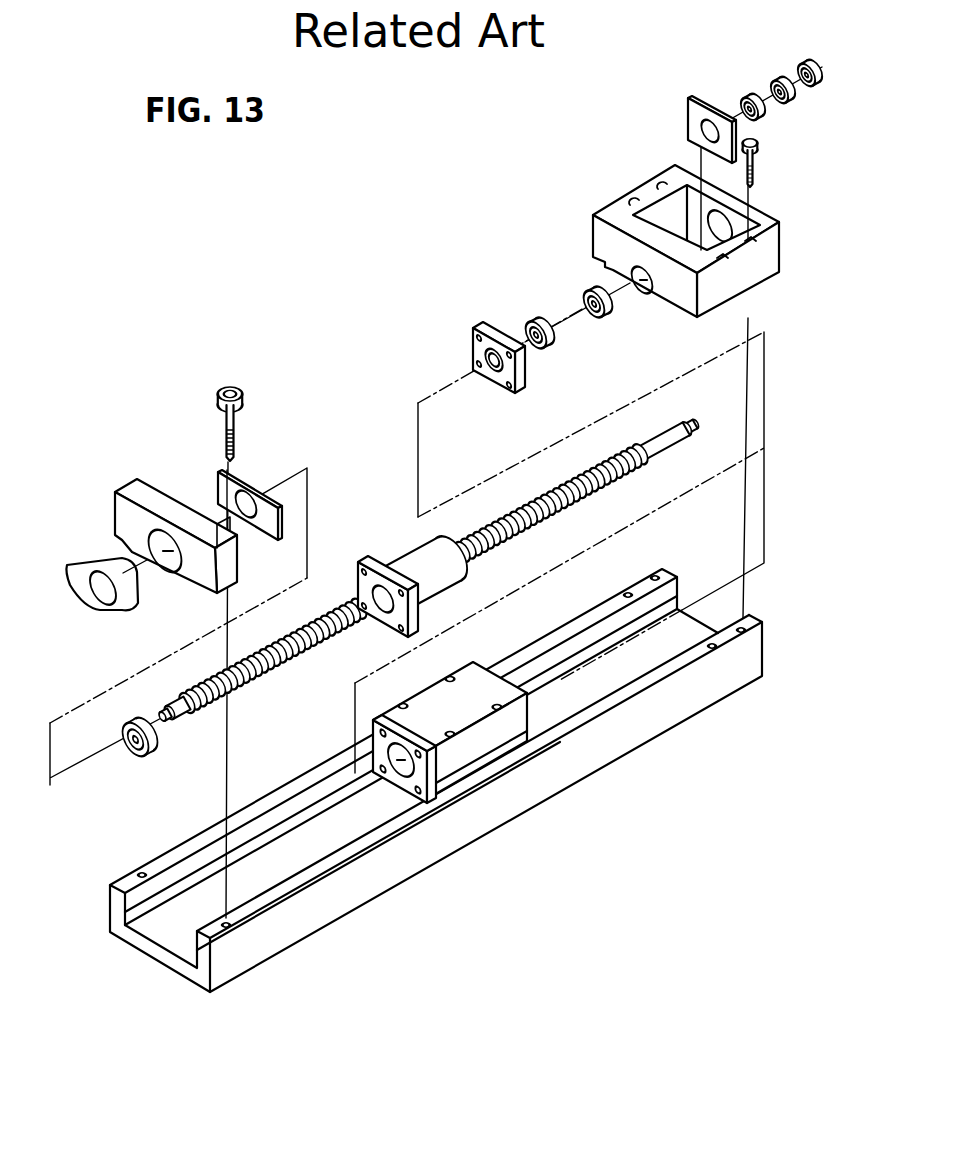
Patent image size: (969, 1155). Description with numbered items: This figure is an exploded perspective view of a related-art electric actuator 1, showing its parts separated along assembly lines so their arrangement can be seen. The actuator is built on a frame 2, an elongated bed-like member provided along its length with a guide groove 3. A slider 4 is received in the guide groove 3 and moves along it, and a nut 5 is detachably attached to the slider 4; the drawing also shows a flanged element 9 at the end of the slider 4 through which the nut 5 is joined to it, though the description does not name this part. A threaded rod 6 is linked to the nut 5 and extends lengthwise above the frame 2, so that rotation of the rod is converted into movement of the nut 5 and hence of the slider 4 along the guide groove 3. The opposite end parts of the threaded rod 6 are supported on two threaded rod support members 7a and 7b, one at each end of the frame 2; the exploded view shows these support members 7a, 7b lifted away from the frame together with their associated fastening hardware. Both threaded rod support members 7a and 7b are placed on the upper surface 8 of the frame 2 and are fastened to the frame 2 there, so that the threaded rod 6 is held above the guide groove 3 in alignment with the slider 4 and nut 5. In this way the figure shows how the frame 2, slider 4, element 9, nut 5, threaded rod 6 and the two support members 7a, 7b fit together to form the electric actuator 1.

The electric actuator 1 is at (182, 236).
The frame 2 is at (436, 788).
The guide groove 3 is at (297, 853).
The slider 4 is at (473, 760).
The nut 5 is at (413, 570).
The threaded rod 6 is at (530, 504).
The threaded rod support member 7a is at (155, 492).
The threaded rod support member 7b is at (623, 215).
The upper surface 8 is at (560, 732).
The nut bracket 9 is at (395, 778).